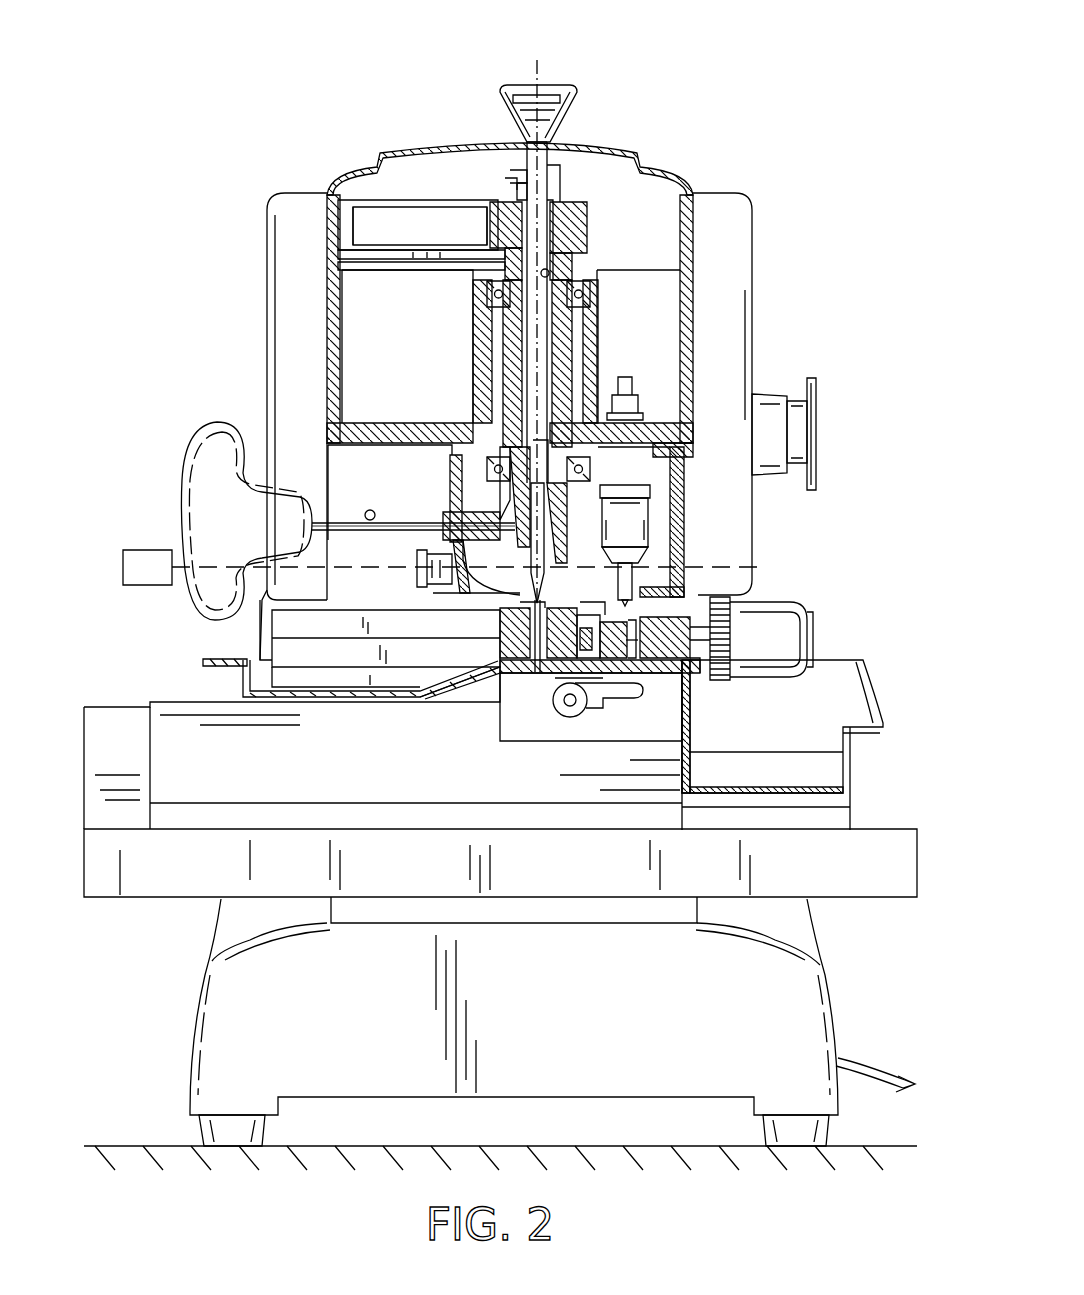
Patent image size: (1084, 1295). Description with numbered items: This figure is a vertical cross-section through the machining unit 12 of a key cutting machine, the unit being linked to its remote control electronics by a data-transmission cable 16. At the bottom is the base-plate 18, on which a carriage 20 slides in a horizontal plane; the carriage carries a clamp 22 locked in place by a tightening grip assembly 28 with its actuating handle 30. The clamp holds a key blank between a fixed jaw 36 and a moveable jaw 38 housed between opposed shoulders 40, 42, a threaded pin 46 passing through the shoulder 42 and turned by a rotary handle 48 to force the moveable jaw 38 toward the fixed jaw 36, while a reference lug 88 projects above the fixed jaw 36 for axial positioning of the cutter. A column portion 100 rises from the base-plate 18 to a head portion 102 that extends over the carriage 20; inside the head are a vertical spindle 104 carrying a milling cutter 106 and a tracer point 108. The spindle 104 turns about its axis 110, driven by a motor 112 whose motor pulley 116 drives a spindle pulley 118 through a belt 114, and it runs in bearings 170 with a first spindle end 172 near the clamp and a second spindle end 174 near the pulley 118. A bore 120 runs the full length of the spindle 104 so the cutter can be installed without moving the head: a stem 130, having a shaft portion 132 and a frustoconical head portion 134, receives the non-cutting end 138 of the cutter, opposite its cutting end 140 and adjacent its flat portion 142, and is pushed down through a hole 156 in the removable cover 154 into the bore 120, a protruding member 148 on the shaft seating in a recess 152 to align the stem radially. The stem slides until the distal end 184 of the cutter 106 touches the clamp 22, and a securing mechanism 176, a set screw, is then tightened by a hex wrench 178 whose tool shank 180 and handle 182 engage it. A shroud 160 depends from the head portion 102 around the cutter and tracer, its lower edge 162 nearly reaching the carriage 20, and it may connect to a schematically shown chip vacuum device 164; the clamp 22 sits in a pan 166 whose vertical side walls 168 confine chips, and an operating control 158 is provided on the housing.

The machining unit 12 is at (790, 168).
The data-transmission cable 16 is at (868, 1065).
The base-plate 18 is at (199, 1010).
The carriage 20 is at (510, 710).
The clamp 22 is at (513, 680).
The tightening grip assembly 28 is at (567, 722).
The actuating handle 30 is at (617, 693).
The fixed jaw 36 is at (560, 715).
The moveable jaw 38 is at (632, 660).
The shoulder 40 is at (505, 635).
The shoulder 42 is at (690, 665).
The threaded pin 46 is at (714, 637).
The rotary handle 48 is at (790, 630).
The reference lug 88 is at (470, 681).
The column portion 100 is at (272, 630).
The head portion 102 is at (327, 243).
The spindle 104 is at (517, 340).
The milling cutter 106 is at (450, 555).
The tracer point 108 is at (640, 580).
The axis 110 is at (540, 70).
The motor 112 is at (347, 268).
The belt 114 is at (587, 226).
The motor pulley 116 is at (402, 200).
The spindle pulley 118 is at (553, 207).
The bore 120 is at (548, 275).
The stem 130 is at (586, 86).
The shaft portion 132 is at (533, 350).
The frustoconical head portion 134 is at (507, 97).
The non-cutting end 138 is at (655, 425).
The cutting end 140 is at (500, 612).
The flat portion 142 is at (650, 503).
The protruding member 148 is at (513, 180).
The recess 152 is at (517, 190).
The removable cover 154 is at (360, 173).
The hole 156 is at (517, 187).
The operating control 158 is at (816, 400).
The shroud 160 is at (450, 478).
The lower edge 162 is at (458, 600).
The chip vacuum device 164 is at (441, 567).
The pan 166 is at (237, 676).
The vertical side walls 168 is at (243, 690).
The bearings 170 is at (590, 298).
The first spindle end 172 is at (632, 538).
The second spindle end 174 is at (573, 193).
The securing mechanism 176 is at (480, 518).
The hex wrench 178 is at (210, 482).
The tool shank 180 is at (343, 522).
The handle 182 is at (207, 472).
The distal end 184 is at (550, 604).